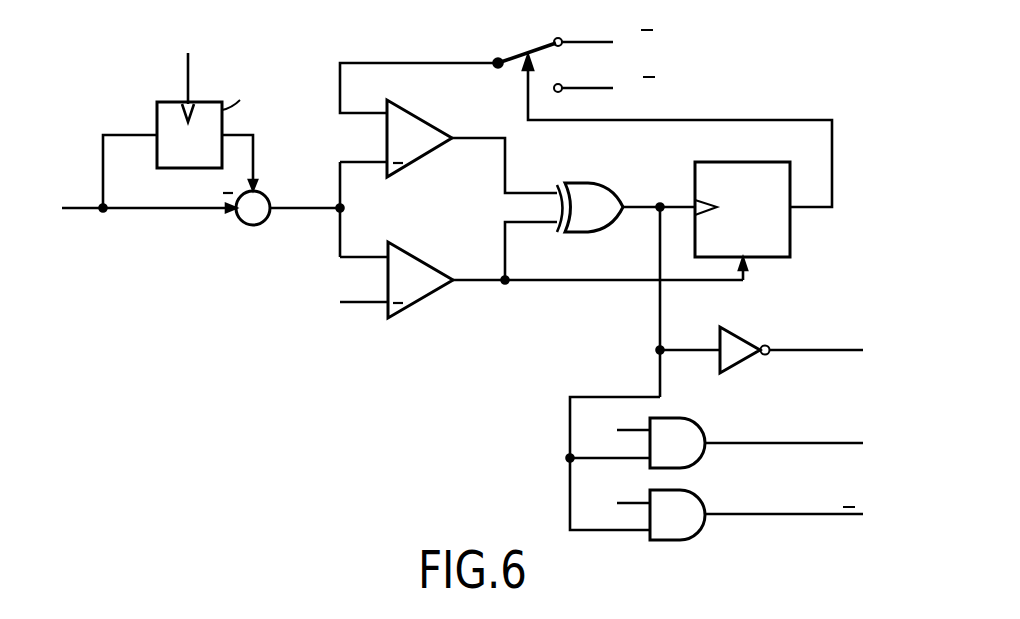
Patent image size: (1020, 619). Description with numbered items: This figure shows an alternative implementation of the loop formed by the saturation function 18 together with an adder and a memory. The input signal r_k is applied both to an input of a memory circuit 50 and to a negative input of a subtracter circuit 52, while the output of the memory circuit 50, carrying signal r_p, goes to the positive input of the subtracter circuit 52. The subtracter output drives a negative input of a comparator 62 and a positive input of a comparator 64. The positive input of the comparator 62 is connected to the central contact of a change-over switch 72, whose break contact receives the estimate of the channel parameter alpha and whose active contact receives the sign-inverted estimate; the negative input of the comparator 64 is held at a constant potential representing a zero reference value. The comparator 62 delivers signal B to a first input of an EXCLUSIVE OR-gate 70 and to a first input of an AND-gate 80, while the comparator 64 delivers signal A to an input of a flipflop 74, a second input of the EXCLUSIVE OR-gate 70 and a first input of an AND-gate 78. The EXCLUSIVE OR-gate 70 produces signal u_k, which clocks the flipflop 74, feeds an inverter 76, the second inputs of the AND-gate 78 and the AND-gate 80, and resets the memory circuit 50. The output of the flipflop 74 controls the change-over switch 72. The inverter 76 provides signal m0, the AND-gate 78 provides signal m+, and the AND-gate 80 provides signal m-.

The saturation function 18 is at (462, 277).
The memory circuit 50 is at (157, 112).
The subtracter circuit 52 is at (272, 190).
The comparator 62 is at (413, 166).
The comparator 64 is at (417, 254).
The EXCLUSIVE OR-gate 70 is at (607, 183).
The change-over switch 72 is at (519, 48).
The flipflop 74 is at (714, 161).
The inverter 76 is at (741, 318).
The AND-gate 78 is at (692, 418).
The AND-gate 80 is at (692, 490).